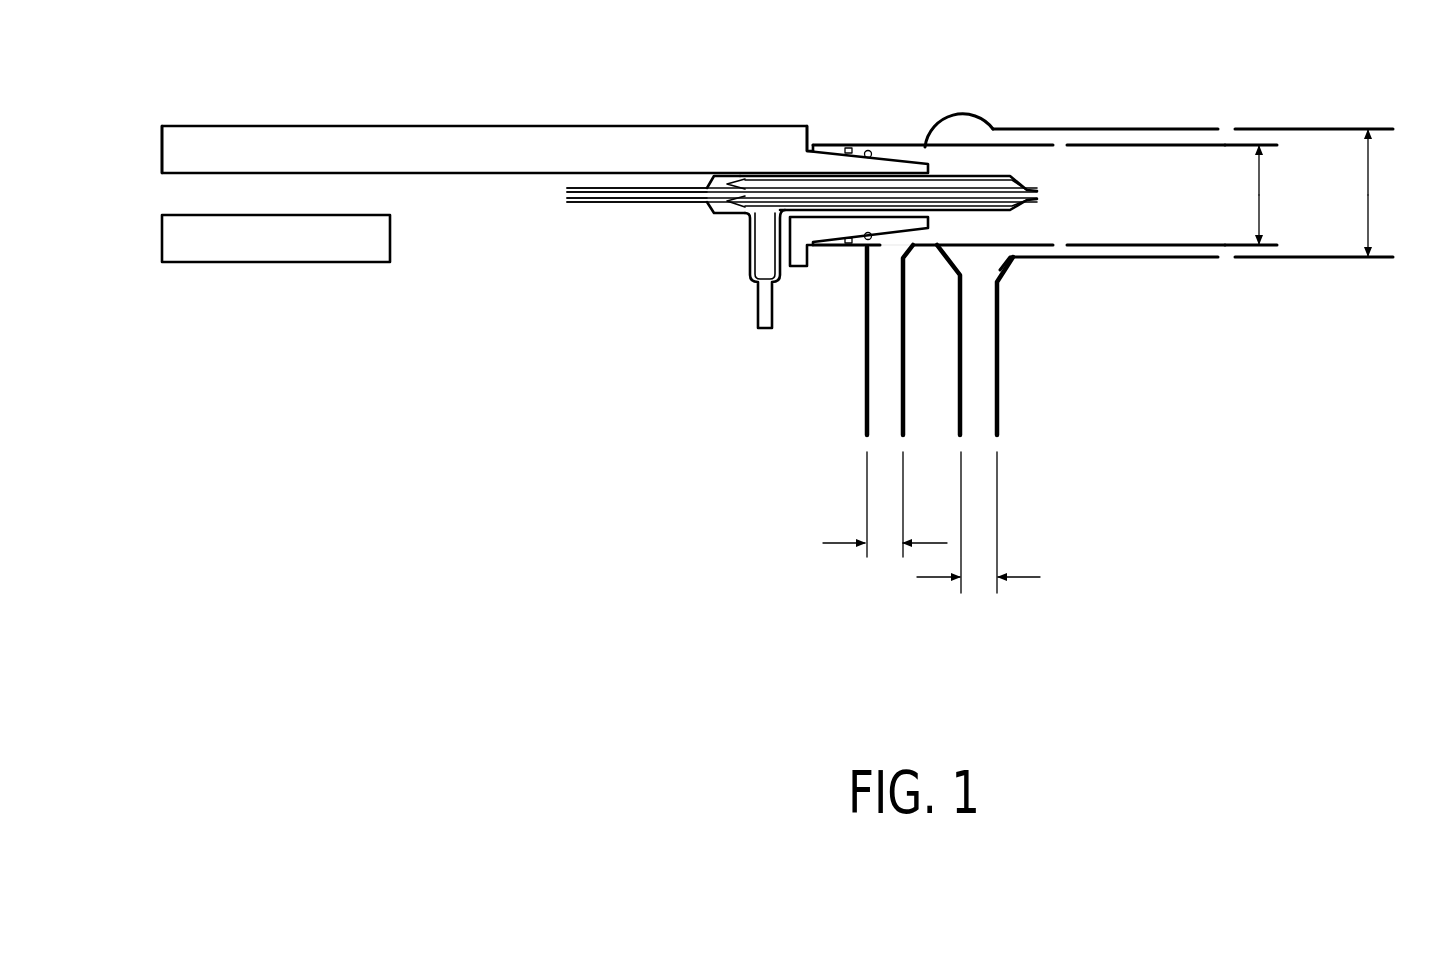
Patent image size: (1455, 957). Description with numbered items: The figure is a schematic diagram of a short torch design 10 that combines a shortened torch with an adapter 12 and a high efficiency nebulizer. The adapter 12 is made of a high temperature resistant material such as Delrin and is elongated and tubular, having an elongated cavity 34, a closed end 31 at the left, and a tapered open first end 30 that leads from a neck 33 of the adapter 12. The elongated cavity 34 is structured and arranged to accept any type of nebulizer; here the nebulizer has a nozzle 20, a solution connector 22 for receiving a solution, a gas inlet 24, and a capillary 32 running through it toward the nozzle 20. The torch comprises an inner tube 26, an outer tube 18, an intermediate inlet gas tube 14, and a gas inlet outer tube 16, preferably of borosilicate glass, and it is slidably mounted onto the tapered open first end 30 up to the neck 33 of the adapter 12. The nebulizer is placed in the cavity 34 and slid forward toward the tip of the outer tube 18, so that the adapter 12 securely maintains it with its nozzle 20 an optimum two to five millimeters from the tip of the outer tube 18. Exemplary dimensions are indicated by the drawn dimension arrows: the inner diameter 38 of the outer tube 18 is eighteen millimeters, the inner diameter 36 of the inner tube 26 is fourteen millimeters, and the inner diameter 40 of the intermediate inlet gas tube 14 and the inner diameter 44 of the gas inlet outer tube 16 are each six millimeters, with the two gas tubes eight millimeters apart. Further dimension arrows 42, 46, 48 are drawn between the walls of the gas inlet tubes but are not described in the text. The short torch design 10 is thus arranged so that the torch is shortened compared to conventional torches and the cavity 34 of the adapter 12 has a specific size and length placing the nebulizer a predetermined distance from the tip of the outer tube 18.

The short torch design 10 is at (195, 373).
The adapter 12 is at (392, 125).
The intermediate inlet gas tube 14 is at (865, 390).
The gas inlet outer tube 16 is at (998, 390).
The outer tube 18 is at (1193, 127).
The nozzle 20 is at (1012, 180).
The solution connector 22 is at (710, 210).
The gas inlet 24 is at (745, 268).
The inner tube 26 is at (907, 140).
The tapered open first end 30 is at (893, 140).
The closed end 31 is at (162, 135).
The capillary 32 is at (1015, 212).
The neck 33 is at (820, 137).
The elongated cavity 34 is at (580, 188).
The inner diameter of the inner tube 36 is at (1260, 190).
The inner diameter of the outer tube 38 is at (1368, 187).
The inner diameter of the intermediate inlet gas tube 40 is at (875, 433).
The channel width 42 is at (833, 540).
The inner diameter of the gas inlet outer tube 44 is at (980, 427).
The channel width 46 is at (1028, 575).
The channel spacing 48 is at (942, 433).